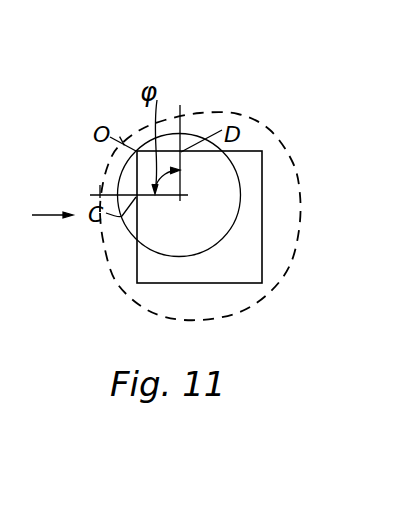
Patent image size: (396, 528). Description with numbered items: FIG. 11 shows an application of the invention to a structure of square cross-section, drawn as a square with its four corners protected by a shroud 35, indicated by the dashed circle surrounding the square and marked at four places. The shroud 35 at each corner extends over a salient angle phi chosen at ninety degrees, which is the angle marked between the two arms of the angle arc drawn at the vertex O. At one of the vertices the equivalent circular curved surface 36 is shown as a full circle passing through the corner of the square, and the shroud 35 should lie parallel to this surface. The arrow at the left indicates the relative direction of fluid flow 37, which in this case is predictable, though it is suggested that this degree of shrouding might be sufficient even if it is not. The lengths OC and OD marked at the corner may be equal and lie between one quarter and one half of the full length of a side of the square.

The shroud 35 is at (143, 127).
The equivalent circular curved surface 36 is at (190, 133).
The relative direction of fluid flow 37 is at (42, 215).